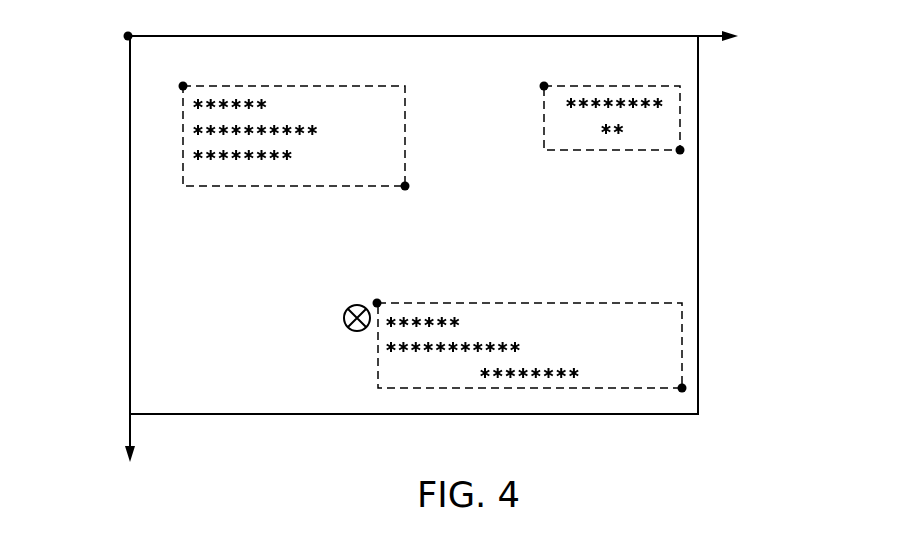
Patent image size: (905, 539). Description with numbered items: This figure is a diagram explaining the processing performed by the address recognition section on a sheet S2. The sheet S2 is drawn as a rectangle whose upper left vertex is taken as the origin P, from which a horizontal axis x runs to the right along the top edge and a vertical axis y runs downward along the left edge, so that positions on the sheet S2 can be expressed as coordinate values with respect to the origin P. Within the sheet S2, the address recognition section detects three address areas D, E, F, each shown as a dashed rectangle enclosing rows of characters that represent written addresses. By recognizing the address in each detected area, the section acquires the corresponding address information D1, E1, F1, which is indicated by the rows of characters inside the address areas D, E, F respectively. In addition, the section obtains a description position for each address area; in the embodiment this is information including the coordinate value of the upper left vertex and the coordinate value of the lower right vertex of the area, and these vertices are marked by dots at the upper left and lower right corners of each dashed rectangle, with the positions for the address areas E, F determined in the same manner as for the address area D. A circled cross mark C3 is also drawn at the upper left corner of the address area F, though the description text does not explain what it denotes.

The sheet S2 is at (438, 36).
The origin P is at (123, 37).
The x coordinate x is at (729, 38).
The y coordinate y is at (118, 438).
The address area D is at (335, 86).
The address information D1 is at (238, 172).
The address area E is at (605, 86).
The address information E1 is at (612, 145).
The address area F is at (518, 303).
The address information F1 is at (423, 302).
The cursor position C3 is at (332, 318).